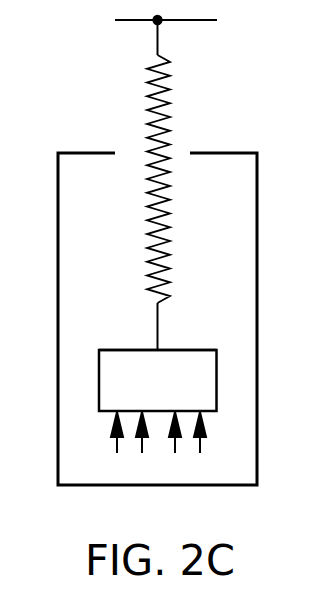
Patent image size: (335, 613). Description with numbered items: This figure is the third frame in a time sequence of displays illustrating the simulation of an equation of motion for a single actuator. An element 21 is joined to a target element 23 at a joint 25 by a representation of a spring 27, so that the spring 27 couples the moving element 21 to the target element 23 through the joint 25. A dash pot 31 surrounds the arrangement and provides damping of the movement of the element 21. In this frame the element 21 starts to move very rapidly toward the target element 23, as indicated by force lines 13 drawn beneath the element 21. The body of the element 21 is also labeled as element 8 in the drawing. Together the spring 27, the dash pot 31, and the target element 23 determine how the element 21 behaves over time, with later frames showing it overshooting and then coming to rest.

The mass / proof mass body 8 is at (217, 393).
The force lines 13 is at (115, 440).
The element 21 is at (202, 347).
The target element 23 is at (207, 21).
The joint 25 is at (153, 25).
The spring 27 is at (170, 250).
The dash pot 31 is at (259, 214).